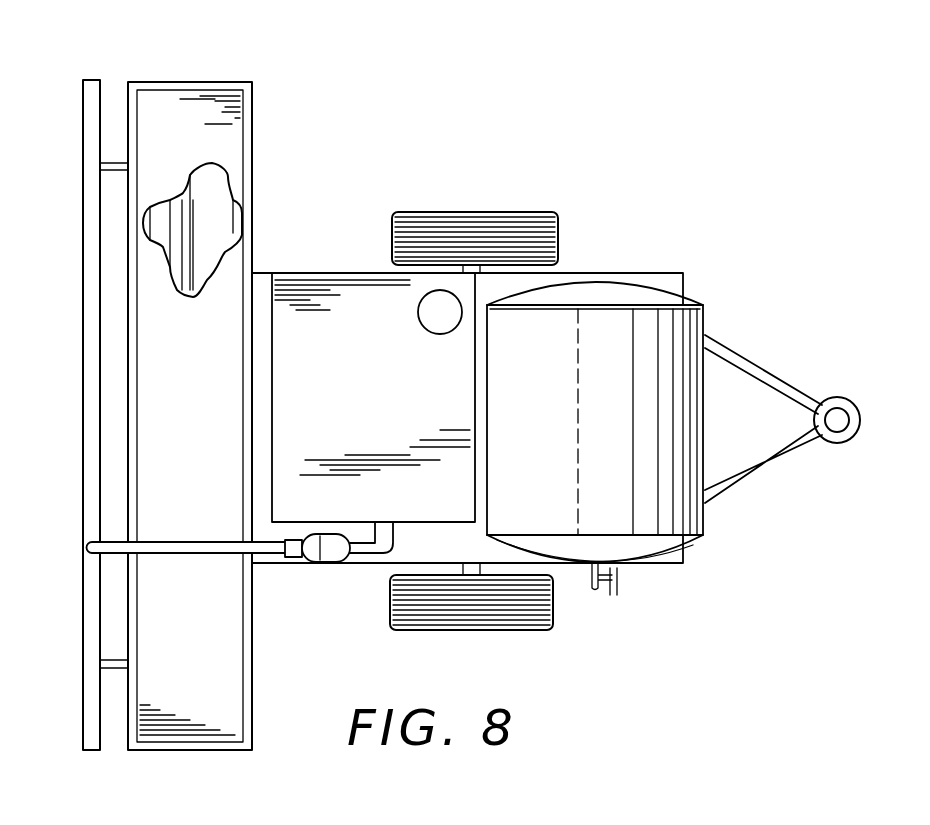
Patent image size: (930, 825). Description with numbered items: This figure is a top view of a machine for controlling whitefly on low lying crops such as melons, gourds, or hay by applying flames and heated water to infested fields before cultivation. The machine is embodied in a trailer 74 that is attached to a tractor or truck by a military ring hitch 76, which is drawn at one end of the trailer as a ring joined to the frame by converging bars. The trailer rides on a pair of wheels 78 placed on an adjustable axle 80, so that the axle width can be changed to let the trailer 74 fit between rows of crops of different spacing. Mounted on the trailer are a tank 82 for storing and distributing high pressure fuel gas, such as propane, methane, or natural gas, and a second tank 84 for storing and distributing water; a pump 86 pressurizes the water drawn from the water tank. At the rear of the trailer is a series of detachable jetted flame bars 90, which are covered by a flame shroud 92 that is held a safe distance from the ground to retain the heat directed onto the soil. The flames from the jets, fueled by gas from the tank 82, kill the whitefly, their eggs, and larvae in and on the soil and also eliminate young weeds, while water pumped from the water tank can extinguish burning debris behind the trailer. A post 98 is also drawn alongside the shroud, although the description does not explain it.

The trailer 74 is at (314, 259).
The military ring hitch 76 is at (843, 397).
The wheels 78 is at (477, 212).
The adjustable axle 80 is at (520, 268).
The tank 82 is at (643, 325).
The tank 84 is at (352, 273).
The pump 86 is at (331, 557).
The detachable jetted flame bars 90 is at (212, 208).
The flame shroud 92 is at (187, 115).
The support post 98 is at (85, 358).